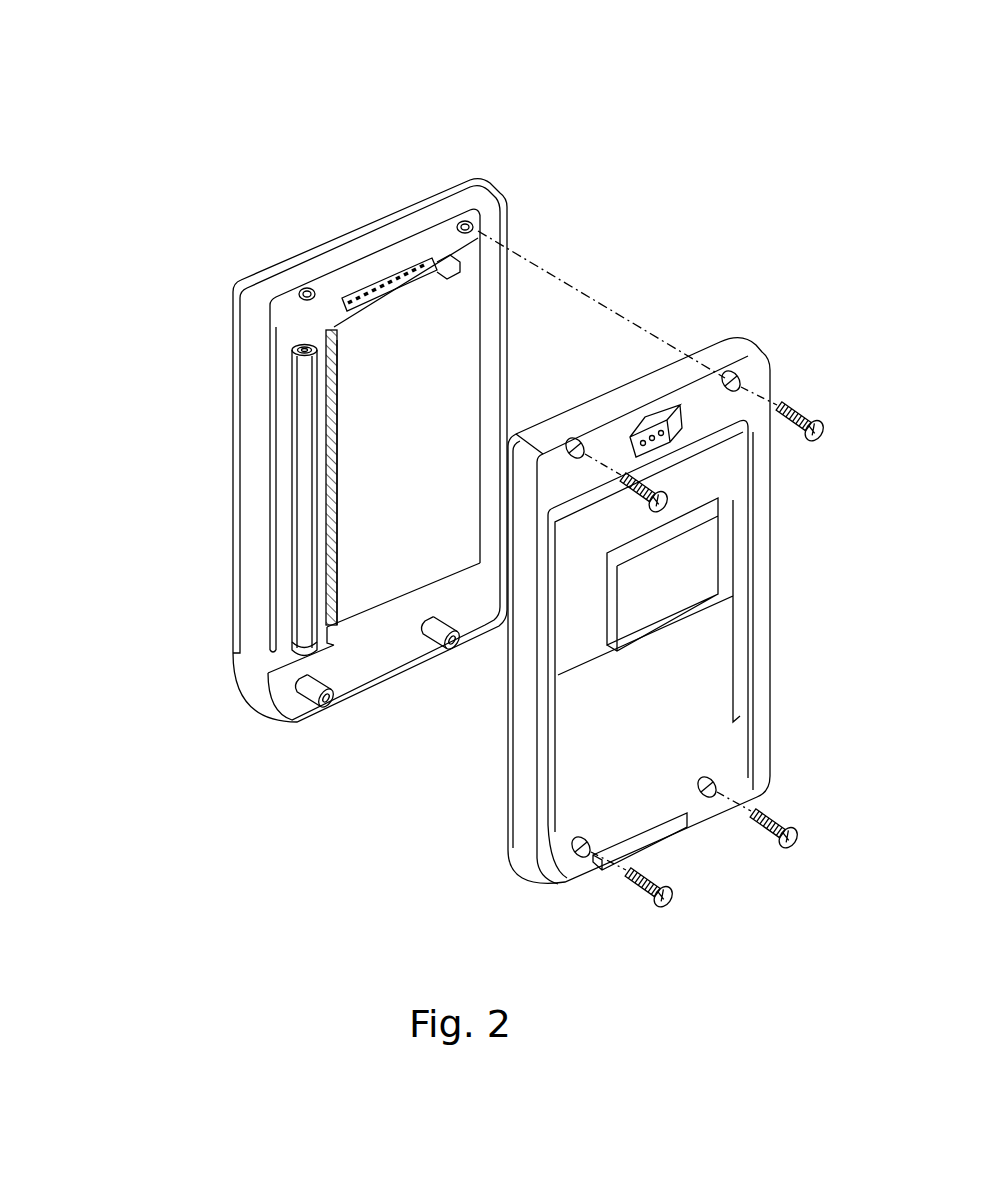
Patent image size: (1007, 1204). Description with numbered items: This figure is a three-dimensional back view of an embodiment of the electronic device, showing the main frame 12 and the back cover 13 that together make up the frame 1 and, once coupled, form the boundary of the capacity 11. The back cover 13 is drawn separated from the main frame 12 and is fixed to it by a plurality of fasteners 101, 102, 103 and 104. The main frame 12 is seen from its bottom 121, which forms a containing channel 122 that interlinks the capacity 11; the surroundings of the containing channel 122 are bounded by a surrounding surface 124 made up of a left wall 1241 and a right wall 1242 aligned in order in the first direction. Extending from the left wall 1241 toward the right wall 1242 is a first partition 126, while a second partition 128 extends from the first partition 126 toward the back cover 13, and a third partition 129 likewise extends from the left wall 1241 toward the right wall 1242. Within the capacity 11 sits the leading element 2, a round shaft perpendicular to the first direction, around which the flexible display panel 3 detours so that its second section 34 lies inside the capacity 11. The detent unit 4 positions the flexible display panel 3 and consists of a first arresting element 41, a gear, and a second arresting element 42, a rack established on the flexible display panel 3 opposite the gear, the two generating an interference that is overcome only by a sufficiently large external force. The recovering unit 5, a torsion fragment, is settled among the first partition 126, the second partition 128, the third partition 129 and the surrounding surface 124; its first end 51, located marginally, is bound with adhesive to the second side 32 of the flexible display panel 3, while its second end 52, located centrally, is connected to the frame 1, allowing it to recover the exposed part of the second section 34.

The frame 1 is at (128, 487).
The leading element 2 is at (483, 247).
The flexible display panel 3 is at (300, 165).
The detent unit 4 is at (355, 90).
The recovering unit 5 is at (200, 235).
The capacity 11 is at (585, 265).
The main frame 12 is at (475, 160).
The back cover 13 is at (770, 558).
The second side 32 is at (335, 335).
The second section 34 is at (407, 327).
The first arresting element 41 is at (372, 287).
The second arresting element 42 is at (400, 255).
The first end 51 is at (320, 625).
The second end 52 is at (300, 340).
The fastener 101 is at (820, 428).
The fastener 102 is at (677, 503).
The fastener 103 is at (790, 850).
The fastener 104 is at (668, 905).
The bottom 121 is at (387, 688).
The containing channel 122 is at (388, 632).
The surrounding surface 124 is at (305, 255).
The first partition 126 is at (283, 327).
The second partition 128 is at (277, 510).
The third partition 129 is at (283, 663).
The left wall 1241 is at (257, 453).
The right wall 1242 is at (487, 375).